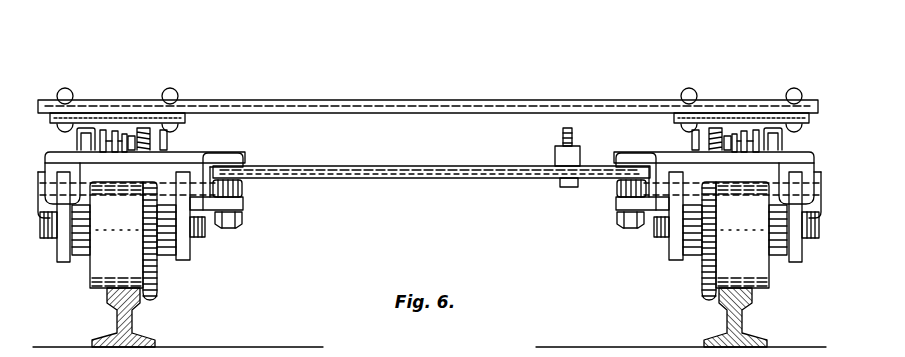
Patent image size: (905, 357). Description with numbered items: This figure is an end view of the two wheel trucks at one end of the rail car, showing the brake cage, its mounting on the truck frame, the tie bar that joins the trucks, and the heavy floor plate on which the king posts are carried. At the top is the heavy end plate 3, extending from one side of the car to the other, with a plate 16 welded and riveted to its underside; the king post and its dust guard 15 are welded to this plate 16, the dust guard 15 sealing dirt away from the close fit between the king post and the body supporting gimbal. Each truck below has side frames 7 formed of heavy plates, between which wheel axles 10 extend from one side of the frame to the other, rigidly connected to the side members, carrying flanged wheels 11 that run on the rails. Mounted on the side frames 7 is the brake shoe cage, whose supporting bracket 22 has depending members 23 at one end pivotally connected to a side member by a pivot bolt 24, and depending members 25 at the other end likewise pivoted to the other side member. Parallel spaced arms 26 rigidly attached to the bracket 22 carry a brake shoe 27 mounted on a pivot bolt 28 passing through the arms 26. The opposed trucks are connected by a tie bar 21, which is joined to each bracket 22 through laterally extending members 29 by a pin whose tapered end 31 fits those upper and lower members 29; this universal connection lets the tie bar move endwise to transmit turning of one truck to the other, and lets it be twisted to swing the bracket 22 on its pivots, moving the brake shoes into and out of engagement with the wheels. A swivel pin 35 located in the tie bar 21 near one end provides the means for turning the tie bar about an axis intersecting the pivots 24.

The heavy end plate 3 is at (452, 100).
The side frames 7 is at (188, 250).
The wheel axles 10 is at (45, 240).
The flanged wheels 11 is at (160, 285).
The dust guard 15 is at (200, 152).
The plate 16 is at (123, 120).
The tie bar 21 is at (432, 180).
The supporting bracket 22 is at (205, 165).
The depending members 23 is at (45, 185).
The pivot bolt 24 is at (168, 186).
The depending members 25 is at (210, 206).
The arms 26 is at (88, 130).
The brake shoe 27 is at (130, 140).
The pivot bolt 28 is at (117, 147).
The laterally extending members 29 is at (247, 190).
The tapered end 31 is at (245, 156).
The swivel pin 35 is at (557, 136).